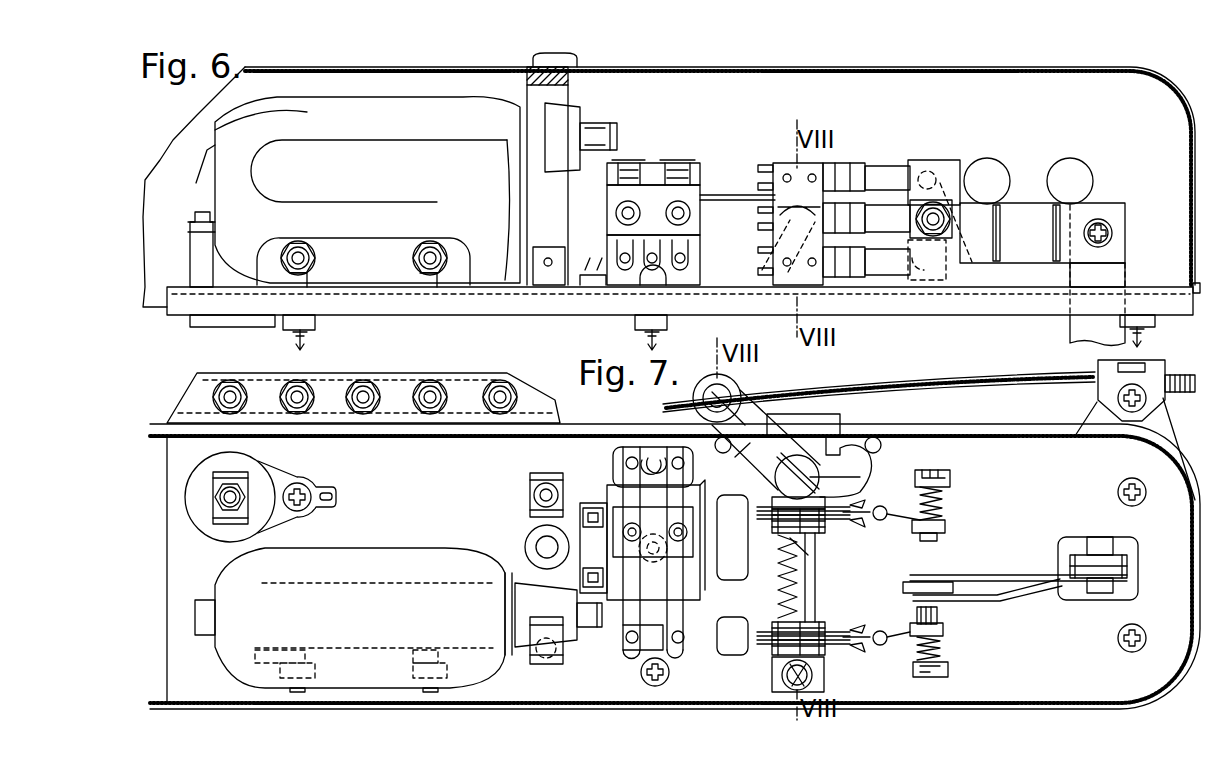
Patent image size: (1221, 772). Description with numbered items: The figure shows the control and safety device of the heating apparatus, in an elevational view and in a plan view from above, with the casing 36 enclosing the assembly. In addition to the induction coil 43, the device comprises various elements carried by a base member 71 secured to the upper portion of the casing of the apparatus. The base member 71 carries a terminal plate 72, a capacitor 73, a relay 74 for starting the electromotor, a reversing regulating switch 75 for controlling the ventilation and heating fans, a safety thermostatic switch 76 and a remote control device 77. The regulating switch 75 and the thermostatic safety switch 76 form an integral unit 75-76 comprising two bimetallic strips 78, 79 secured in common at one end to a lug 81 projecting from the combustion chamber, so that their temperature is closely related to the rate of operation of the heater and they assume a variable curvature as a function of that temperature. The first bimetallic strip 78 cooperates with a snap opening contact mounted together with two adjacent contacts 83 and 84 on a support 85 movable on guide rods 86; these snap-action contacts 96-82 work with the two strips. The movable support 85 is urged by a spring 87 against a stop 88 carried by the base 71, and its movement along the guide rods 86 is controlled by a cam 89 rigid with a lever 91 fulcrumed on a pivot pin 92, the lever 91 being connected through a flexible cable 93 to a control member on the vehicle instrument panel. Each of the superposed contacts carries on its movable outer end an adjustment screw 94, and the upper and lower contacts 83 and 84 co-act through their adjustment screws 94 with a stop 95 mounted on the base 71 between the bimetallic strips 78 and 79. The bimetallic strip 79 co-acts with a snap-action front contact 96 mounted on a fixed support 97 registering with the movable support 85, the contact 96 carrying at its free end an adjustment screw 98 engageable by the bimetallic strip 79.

In FIG. 6, the casing cover 36 is at (1150, 110).
In FIG. 7, the casing cover 36 is at (1137, 440).
In FIG. 6, the induction coil 43 is at (282, 182).
In FIG. 7, the induction coil 43 is at (376, 561).
In FIG. 6, the base member 71 is at (398, 290).
In FIG. 7, the base member 71 is at (182, 463).
In FIG. 7, the terminal plate 72 is at (343, 378).
In FIG. 6, the capacitor 73 is at (193, 258).
In FIG. 7, the capacitor 73 is at (218, 532).
In FIG. 6, the relay 74 is at (713, 257).
In FIG. 7, the relay 74 is at (704, 562).
In FIG. 7, the reversing regulating switch 75 is at (961, 563).
In FIG. 7, the safety thermostatic switch 76 is at (958, 611).
In FIG. 6, the regulating switch and thermostatic safety switch unit 75-76 is at (984, 266).
In FIG. 7, the remote control device 77 is at (756, 391).
In FIG. 7, the first bimetallic strip 78 is at (1018, 572).
In FIG. 6, the bimetallic strip 79 is at (1025, 210).
In FIG. 7, the bimetallic strip 79 is at (1026, 584).
In FIG. 6, the lug 81 is at (1120, 280).
In FIG. 7, the lug 81 is at (1118, 563).
In FIG. 6, the contact 83 is at (889, 158).
In FIG. 7, the contact 83 is at (847, 535).
In FIG. 6, the contact 84 is at (895, 295).
In FIG. 6, the movable support 85 is at (790, 170).
In FIG. 6, the guide rods 86 is at (762, 262).
In FIG. 7, the guide rods 86 is at (793, 540).
In FIG. 7, the spring 87 is at (783, 560).
In FIG. 7, the stop 88 is at (773, 490).
In FIG. 7, the cam 89 is at (860, 460).
In FIG. 7, the lever 91 is at (742, 463).
In FIG. 7, the pivot pin 92 is at (812, 480).
In FIG. 7, the flexible cable 93 is at (917, 382).
In FIG. 6, the adjustment screw 94 is at (950, 199).
In FIG. 7, the adjustment screw 94 is at (948, 470).
In FIG. 7, the stop 95 is at (903, 586).
In FIG. 7, the snap-action front contact 96 is at (843, 618).
In FIG. 6, the snap-action contacts 96-82 is at (891, 196).
In FIG. 7, the fixed support 97 is at (772, 657).
In FIG. 7, the adjustment screw 98 is at (950, 668).